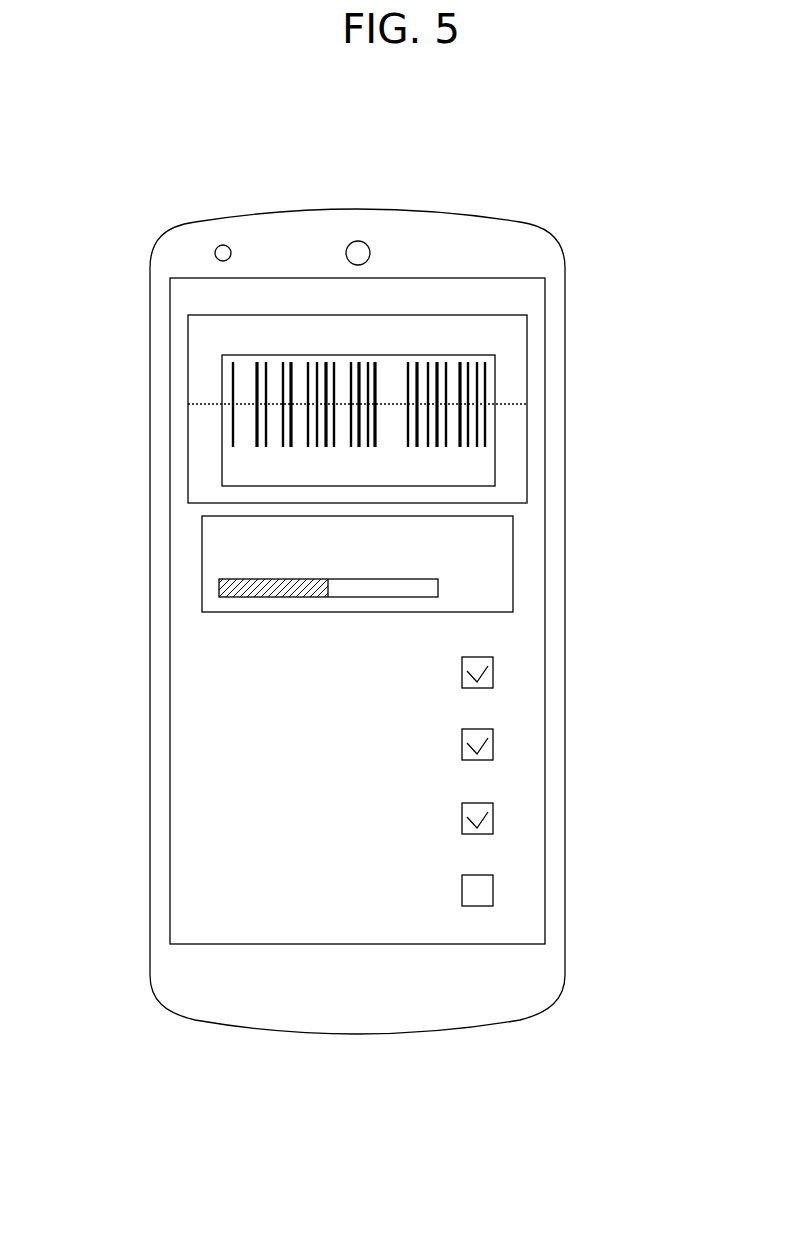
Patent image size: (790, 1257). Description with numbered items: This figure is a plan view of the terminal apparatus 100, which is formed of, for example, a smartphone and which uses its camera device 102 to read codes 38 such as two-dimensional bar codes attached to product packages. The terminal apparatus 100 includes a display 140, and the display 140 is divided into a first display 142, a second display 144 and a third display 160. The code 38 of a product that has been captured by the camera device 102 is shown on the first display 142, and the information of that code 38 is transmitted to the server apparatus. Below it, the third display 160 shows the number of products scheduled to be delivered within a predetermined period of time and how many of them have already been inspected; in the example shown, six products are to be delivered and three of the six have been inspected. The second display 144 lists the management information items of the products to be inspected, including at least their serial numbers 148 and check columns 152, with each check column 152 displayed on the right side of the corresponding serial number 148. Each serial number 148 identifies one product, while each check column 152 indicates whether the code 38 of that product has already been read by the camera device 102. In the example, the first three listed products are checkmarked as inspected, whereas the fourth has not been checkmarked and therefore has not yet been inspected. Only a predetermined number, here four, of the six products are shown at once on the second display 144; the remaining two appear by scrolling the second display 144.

The terminal apparatus 100 is at (533, 143).
The camera device 102 is at (223, 244).
The code 38 is at (236, 372).
The display 140 is at (546, 378).
The first display 142 is at (376, 409).
The third display 160 is at (202, 557).
The second display 144 is at (374, 873).
The serial number 148 is at (327, 693).
The check column 152 is at (520, 786).